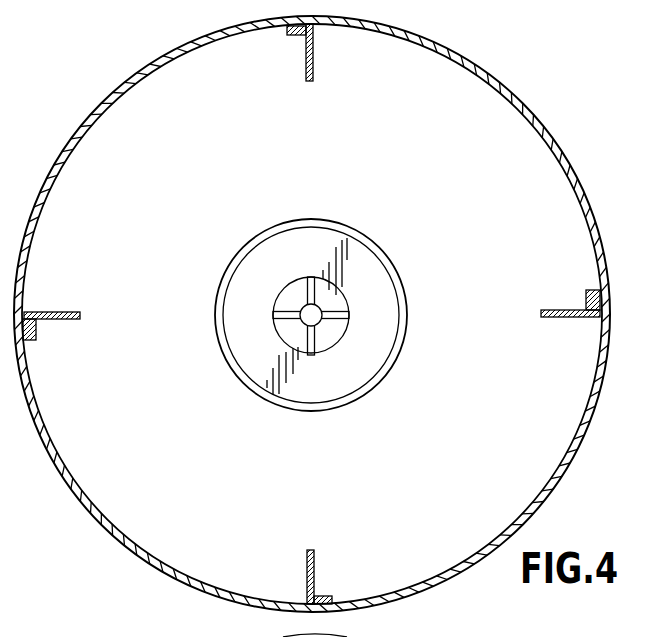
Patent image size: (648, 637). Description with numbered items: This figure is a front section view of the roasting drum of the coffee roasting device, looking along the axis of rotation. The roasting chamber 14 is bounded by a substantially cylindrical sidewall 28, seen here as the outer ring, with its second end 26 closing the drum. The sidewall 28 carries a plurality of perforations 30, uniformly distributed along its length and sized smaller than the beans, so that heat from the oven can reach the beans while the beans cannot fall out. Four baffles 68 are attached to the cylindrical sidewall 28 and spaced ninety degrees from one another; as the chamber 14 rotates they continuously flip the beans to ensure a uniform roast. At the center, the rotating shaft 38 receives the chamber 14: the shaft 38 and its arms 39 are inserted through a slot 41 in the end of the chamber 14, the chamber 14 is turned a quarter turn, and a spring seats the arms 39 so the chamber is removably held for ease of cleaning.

The roasting chamber 14 is at (522, 97).
The second end 26 is at (315, 558).
The cylindrical sidewall 28 is at (532, 138).
The perforations 30 is at (353, 250).
The rotating shaft 38 is at (310, 312).
The arms 39 is at (336, 311).
The slot 41 is at (311, 276).
The baffles 68 is at (305, 66).